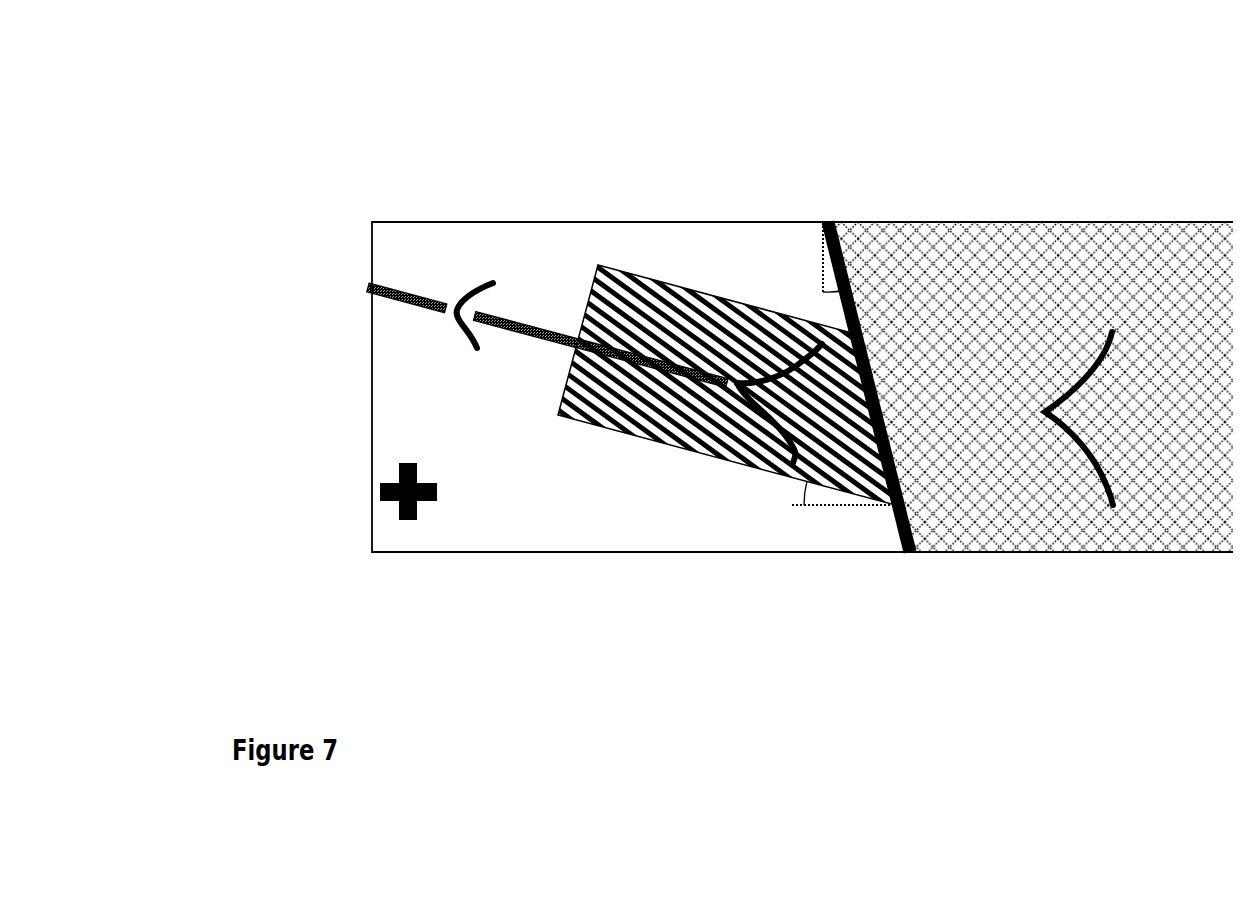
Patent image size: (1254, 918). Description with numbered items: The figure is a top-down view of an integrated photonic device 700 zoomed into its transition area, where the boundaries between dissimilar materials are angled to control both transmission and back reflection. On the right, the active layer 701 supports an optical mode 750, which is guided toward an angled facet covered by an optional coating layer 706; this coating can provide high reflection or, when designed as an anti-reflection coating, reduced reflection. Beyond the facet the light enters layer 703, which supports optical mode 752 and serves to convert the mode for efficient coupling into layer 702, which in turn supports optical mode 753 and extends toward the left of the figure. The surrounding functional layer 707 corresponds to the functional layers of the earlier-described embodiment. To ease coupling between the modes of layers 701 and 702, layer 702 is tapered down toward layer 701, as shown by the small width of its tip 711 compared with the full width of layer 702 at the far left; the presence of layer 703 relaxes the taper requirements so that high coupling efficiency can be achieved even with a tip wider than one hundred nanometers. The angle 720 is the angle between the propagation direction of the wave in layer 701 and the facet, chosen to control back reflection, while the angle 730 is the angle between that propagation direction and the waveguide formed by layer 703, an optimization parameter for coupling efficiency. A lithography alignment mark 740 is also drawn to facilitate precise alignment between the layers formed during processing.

The integrated photonic device 700 is at (306, 78).
The active layer 701 is at (1010, 222).
The layer 702 is at (438, 297).
The layer 703 is at (625, 275).
The coating layer 706 is at (829, 223).
The functional layer 707 is at (372, 388).
The tip 711 is at (730, 380).
The angle 720 is at (837, 253).
The angle 730 is at (830, 495).
The lithography alignment mark 740 is at (400, 502).
The optical mode 750 is at (1115, 507).
The optical mode 752 is at (772, 417).
The optical mode 753 is at (478, 355).